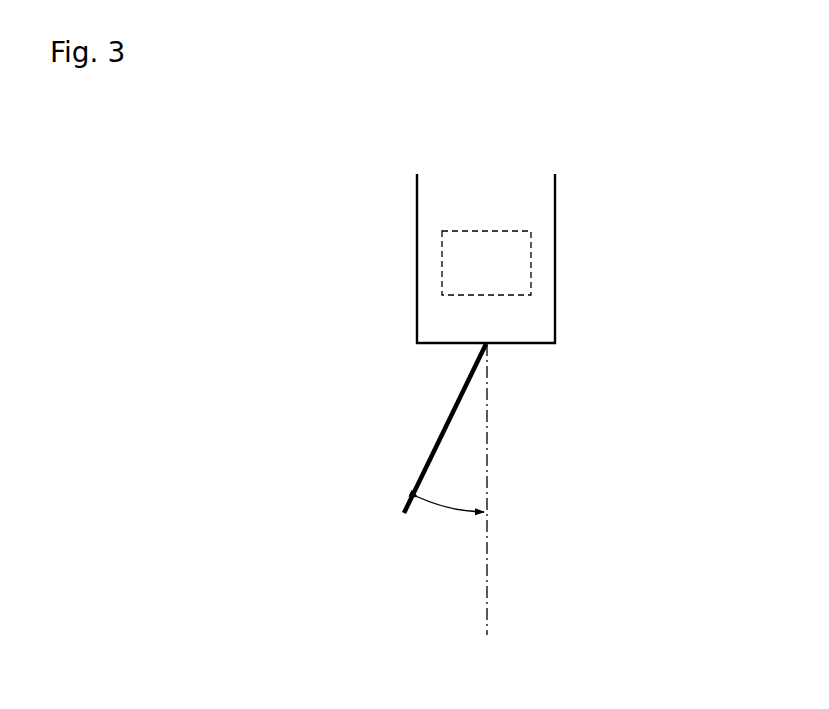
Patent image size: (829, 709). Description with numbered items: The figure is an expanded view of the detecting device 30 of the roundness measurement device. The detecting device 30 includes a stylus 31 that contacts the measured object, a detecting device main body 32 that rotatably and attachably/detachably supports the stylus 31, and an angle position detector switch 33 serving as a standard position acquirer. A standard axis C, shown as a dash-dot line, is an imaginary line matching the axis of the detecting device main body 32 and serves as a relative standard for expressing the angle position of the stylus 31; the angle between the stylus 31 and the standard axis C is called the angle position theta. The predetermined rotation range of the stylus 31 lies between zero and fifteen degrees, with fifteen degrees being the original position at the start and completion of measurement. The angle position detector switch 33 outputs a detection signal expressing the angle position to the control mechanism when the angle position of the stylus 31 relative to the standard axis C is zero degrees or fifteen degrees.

The detecting device 30 is at (563, 420).
The stylus 31 is at (447, 423).
The detecting device main body 32 is at (555, 315).
The angle position detector switch 33 is at (531, 258).